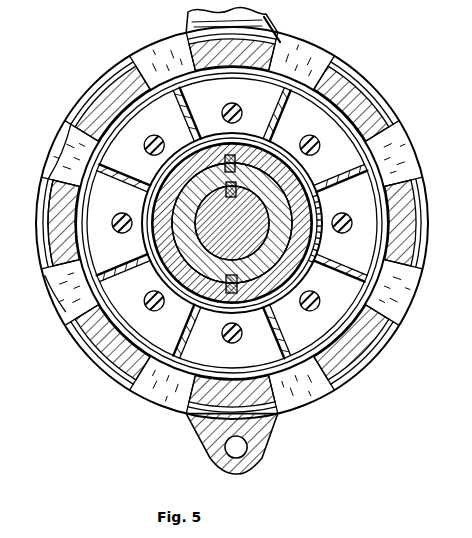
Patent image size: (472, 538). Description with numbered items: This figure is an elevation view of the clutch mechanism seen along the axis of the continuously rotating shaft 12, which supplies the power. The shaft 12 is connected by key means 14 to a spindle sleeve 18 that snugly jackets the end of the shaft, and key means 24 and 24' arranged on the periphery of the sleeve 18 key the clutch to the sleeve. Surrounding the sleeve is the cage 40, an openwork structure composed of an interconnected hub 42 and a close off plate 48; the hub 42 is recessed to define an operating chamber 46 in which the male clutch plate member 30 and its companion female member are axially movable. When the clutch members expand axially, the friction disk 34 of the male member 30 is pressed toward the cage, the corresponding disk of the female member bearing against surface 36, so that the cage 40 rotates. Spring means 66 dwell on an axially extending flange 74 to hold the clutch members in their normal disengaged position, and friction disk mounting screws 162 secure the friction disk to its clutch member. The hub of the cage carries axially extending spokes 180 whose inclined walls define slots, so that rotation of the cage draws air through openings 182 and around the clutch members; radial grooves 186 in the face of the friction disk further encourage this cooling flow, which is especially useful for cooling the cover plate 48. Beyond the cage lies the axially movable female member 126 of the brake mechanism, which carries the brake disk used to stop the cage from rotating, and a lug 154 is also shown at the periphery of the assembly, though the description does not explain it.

The shaft 12 is at (235, 220).
The key means 14 is at (232, 223).
The spindle sleeve 18 is at (266, 226).
The key means 24 is at (213, 176).
The key means 24' is at (241, 276).
The male clutch plate member 30 is at (162, 370).
The friction disk 34 is at (173, 410).
The surface 36 is at (67, 299).
The cage 40 is at (100, 370).
The hub 42 is at (75, 341).
The operating chamber 46 is at (64, 312).
The close off plate 48 is at (62, 320).
The spring means 66 is at (323, 207).
The axially extending flange 74 is at (270, 153).
The female member 126 is at (274, 436).
The mounting lug 154 is at (186, 30).
The friction disk mounting screws 162 is at (222, 110).
The spokes 180 is at (52, 150).
The openings 182 is at (140, 52).
The grooves 186 is at (186, 112).